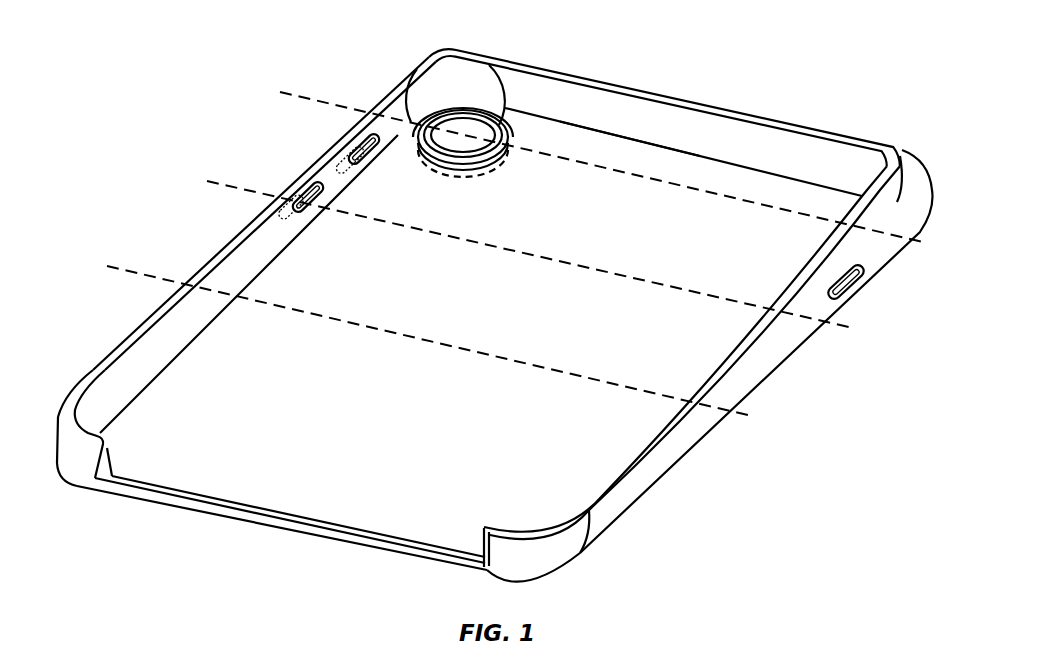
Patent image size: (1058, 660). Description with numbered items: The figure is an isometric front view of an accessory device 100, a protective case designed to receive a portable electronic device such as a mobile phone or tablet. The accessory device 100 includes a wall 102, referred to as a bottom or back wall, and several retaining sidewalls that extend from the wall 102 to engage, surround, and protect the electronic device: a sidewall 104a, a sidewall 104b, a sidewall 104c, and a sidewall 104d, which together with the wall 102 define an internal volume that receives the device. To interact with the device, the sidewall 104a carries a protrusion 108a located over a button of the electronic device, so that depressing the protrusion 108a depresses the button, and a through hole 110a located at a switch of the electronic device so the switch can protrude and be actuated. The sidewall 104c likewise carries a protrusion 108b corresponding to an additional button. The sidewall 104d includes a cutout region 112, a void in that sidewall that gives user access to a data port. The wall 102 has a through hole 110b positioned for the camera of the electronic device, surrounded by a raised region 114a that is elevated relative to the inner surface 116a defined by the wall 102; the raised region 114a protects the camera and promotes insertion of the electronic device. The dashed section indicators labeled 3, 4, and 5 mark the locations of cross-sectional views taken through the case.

The accessory device 100 is at (475, 302).
The wall 102 is at (386, 414).
The sidewall 104a is at (107, 357).
The sidewall 104b is at (777, 120).
The sidewall 104c is at (597, 513).
The sidewall 104d is at (83, 471).
The protrusion 108a is at (289, 187).
The protrusion 108b is at (868, 279).
The through hole 110a is at (347, 133).
The through hole 110b is at (436, 64).
The cutout region 112 is at (192, 503).
The raised region 114a is at (503, 127).
The surface 116a is at (594, 150).
The section line 3- 3 is at (107, 266).
The section line 4- 4 is at (207, 181).
The section line 5- 5 is at (280, 92).